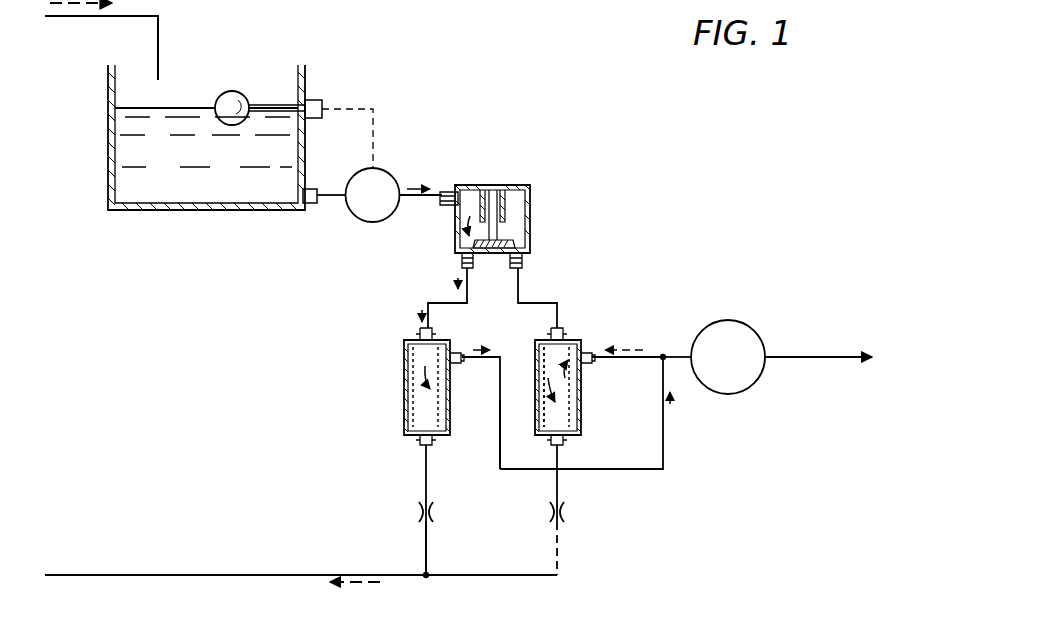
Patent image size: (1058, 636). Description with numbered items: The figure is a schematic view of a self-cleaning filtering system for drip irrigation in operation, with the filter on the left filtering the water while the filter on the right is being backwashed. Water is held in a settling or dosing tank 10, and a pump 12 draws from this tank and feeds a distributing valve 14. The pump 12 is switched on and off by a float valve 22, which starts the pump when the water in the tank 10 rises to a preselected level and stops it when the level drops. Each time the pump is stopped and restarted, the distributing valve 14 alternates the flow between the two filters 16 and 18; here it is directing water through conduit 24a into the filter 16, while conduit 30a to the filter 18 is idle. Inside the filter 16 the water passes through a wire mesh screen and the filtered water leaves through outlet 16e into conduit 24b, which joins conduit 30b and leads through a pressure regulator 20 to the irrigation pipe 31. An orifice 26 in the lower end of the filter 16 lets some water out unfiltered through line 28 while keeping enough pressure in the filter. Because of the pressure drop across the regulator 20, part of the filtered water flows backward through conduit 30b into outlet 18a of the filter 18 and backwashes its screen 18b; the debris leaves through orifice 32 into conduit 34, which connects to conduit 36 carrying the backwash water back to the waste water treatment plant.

The settling or dosing tank 10 is at (305, 72).
The float valve 22 is at (323, 100).
The pump 12 is at (392, 170).
The distributing valve 14 is at (530, 203).
The conduit 24a is at (440, 303).
The conduit 30a is at (543, 303).
The filter 16 is at (404, 372).
The outlet 16e is at (458, 350).
The filter 18 is at (582, 393).
The outlet 18a is at (586, 350).
The screen 18b is at (575, 413).
The conduit 30b is at (657, 353).
The pressure regulator 20 is at (747, 321).
The irrigation pipe 31 is at (832, 353).
The conduit 24b is at (500, 450).
The orifice 26 is at (420, 512).
The drain pipe 28 is at (426, 550).
The orifice 32 is at (565, 512).
The conduit 34 is at (553, 548).
The conduit 36 is at (500, 576).